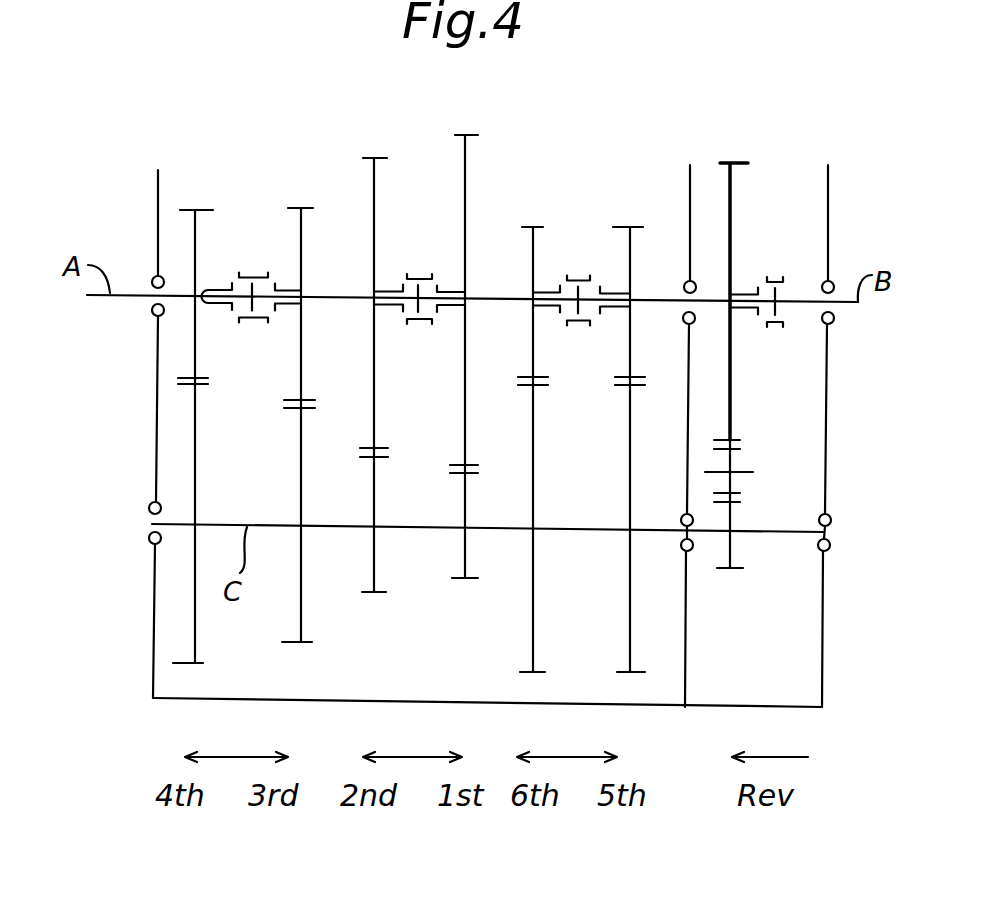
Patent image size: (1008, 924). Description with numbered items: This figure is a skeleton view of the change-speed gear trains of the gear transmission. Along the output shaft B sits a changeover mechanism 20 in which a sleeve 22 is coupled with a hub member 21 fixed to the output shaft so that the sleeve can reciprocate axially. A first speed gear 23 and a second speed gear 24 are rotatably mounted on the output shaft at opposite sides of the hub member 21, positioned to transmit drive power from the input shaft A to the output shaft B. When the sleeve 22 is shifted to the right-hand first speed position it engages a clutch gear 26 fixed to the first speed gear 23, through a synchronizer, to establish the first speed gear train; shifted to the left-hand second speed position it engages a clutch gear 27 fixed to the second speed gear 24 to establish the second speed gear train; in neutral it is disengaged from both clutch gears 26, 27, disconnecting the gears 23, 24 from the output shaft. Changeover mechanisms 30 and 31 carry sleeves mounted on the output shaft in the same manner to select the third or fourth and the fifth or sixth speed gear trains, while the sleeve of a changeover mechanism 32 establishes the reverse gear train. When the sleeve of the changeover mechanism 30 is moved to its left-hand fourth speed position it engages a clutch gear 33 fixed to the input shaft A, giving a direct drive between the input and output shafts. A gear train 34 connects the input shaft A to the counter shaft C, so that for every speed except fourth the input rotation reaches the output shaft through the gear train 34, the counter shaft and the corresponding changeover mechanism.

The changeover mechanism 20 is at (425, 258).
The hub member 21 is at (430, 320).
The sleeve 22 is at (415, 321).
The first speed gear 23 is at (465, 168).
The second speed gear 24 is at (375, 188).
The clutch gear 26 is at (443, 287).
The clutch gear 27 is at (403, 287).
The changeover mechanism 30 is at (257, 258).
The changeover mechanism 31 is at (583, 260).
The changeover mechanism 32 is at (781, 260).
The clutch gear 33 is at (232, 310).
The gear train 34 is at (177, 382).